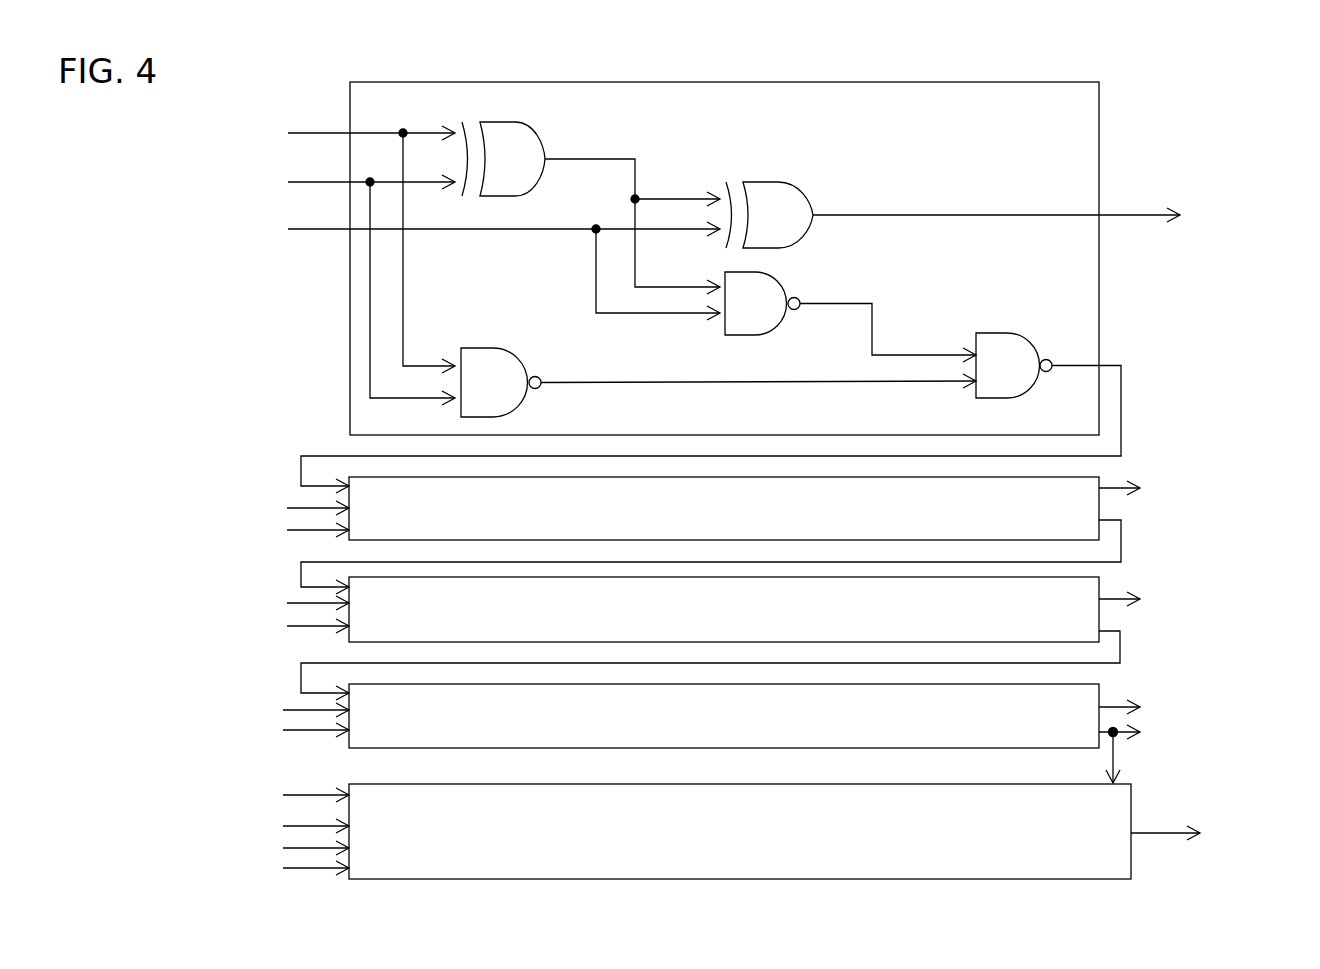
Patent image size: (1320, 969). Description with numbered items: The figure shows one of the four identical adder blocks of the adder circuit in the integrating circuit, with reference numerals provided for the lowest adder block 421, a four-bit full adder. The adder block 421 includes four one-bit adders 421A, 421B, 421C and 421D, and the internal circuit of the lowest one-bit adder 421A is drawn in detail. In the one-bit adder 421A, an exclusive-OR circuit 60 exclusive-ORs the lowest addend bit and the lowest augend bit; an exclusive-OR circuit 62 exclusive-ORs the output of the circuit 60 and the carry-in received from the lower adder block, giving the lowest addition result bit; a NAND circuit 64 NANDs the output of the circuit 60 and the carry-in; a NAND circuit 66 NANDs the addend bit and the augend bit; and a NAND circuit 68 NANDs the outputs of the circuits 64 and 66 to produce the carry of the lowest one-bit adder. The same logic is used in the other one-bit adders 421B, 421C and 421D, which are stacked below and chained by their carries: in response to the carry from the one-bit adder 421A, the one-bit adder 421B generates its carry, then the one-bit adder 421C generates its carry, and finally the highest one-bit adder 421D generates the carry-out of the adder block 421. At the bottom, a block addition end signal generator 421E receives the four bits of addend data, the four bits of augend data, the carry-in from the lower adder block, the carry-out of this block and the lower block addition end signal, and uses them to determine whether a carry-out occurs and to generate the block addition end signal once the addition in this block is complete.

The adder block 421 is at (1132, 133).
The 1-bit adder 421A is at (1099, 337).
The 1-bit adder 421B is at (1099, 478).
The 1-bit adder 421C is at (1099, 582).
The 1-bit adder 421D is at (1099, 690).
The block addition end signal generator 421E is at (1131, 801).
The exclusive-OR circuit 60 is at (513, 152).
The exclusive-OR circuit 62 is at (779, 205).
The NAND circuit 64 is at (767, 311).
The NAND circuit 66 is at (501, 366).
The NAND circuit 68 is at (1014, 354).